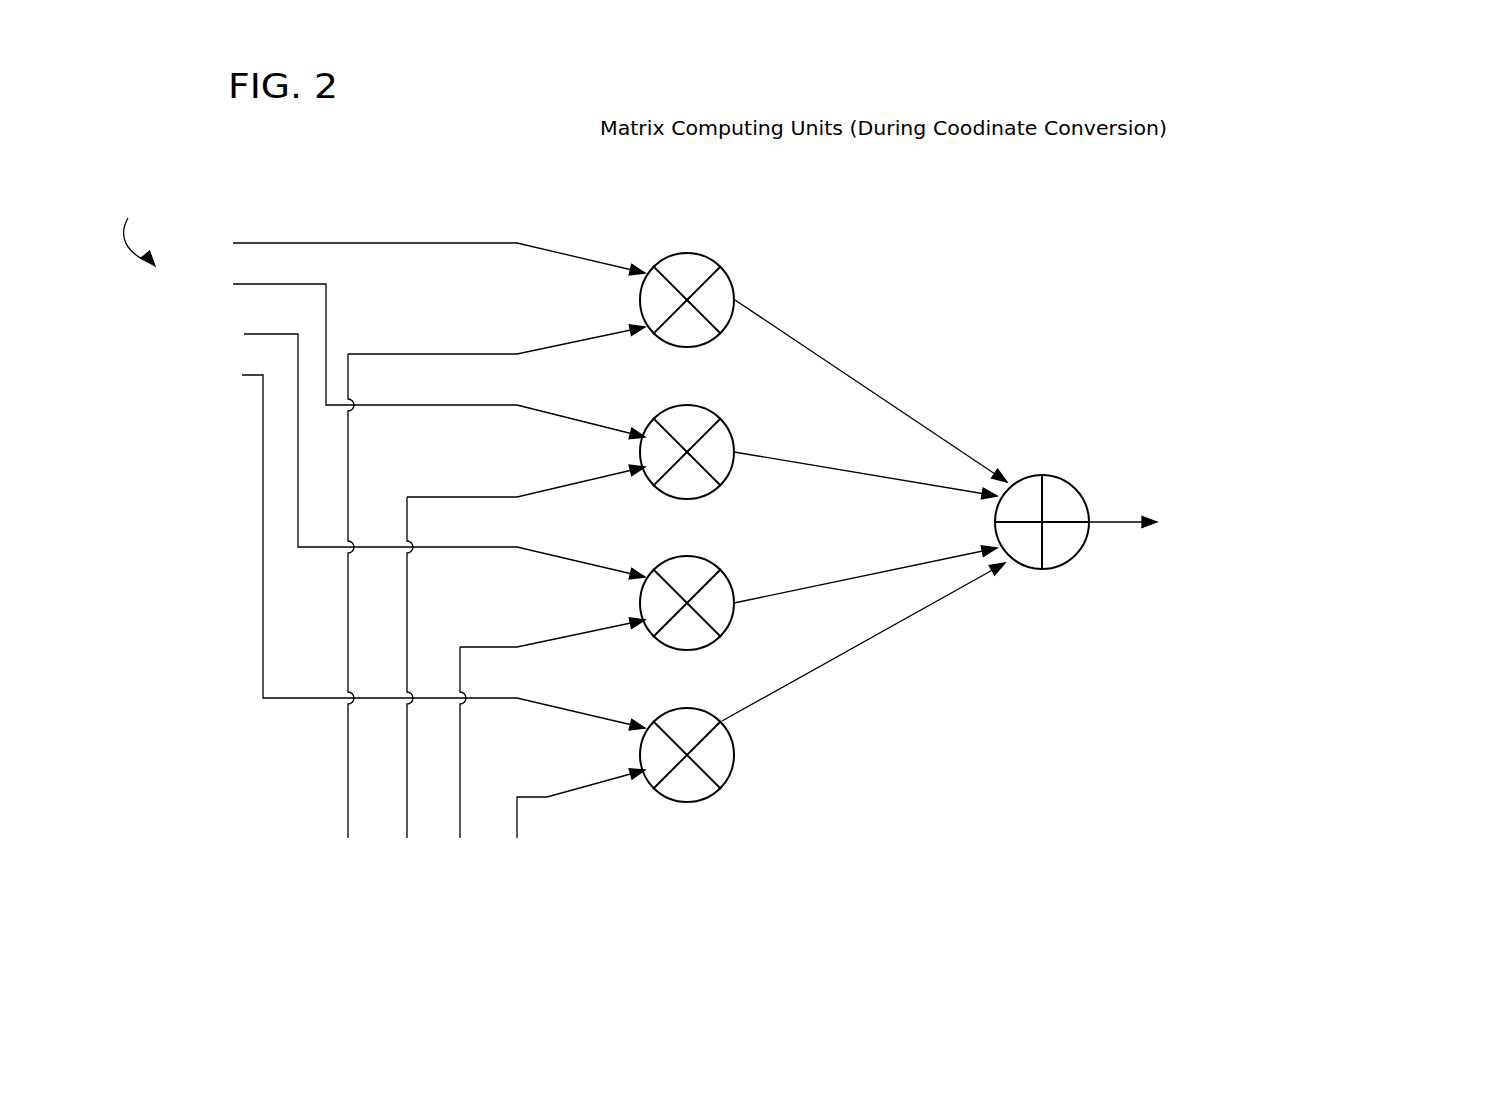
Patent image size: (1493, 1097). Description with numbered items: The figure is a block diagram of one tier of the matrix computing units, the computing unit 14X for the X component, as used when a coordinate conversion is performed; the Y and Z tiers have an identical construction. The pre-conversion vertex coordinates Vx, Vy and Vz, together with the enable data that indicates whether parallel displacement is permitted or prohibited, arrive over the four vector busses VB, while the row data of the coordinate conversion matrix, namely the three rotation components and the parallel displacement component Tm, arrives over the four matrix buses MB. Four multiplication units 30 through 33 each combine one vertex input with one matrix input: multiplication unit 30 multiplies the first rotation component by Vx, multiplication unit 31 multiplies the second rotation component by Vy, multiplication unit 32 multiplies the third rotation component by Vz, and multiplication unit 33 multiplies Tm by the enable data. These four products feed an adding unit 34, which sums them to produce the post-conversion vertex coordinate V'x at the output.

The computing unit for the X component 14X is at (915, 288).
The multiplication unit 30 is at (707, 254).
The multiplication unit 31 is at (707, 406).
The multiplication unit 32 is at (707, 557).
The multiplication unit 33 is at (707, 709).
The adding unit 34 is at (1064, 479).